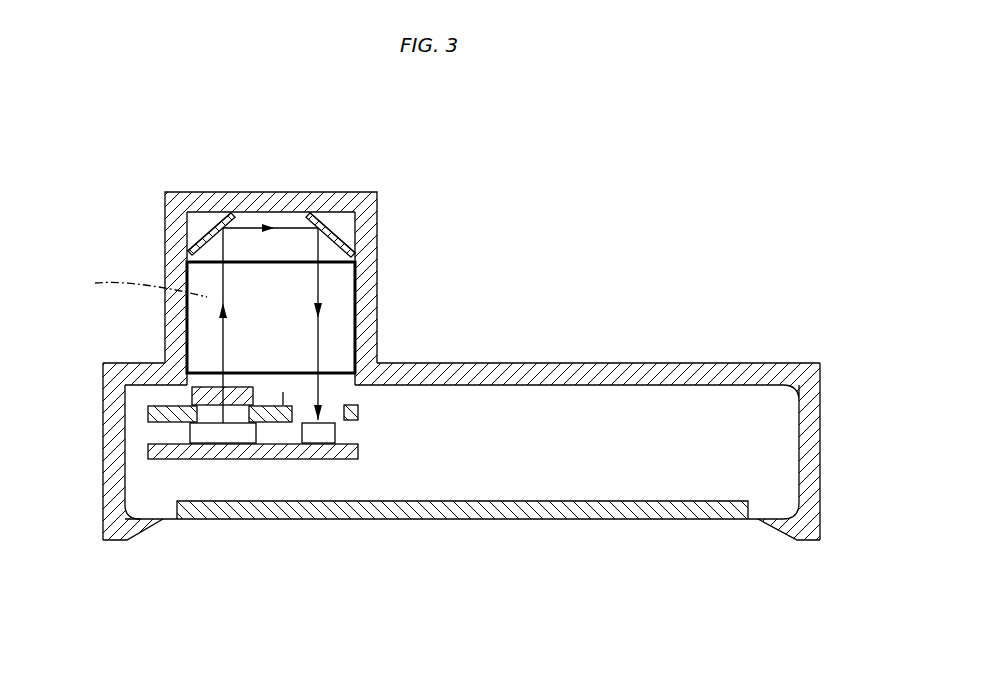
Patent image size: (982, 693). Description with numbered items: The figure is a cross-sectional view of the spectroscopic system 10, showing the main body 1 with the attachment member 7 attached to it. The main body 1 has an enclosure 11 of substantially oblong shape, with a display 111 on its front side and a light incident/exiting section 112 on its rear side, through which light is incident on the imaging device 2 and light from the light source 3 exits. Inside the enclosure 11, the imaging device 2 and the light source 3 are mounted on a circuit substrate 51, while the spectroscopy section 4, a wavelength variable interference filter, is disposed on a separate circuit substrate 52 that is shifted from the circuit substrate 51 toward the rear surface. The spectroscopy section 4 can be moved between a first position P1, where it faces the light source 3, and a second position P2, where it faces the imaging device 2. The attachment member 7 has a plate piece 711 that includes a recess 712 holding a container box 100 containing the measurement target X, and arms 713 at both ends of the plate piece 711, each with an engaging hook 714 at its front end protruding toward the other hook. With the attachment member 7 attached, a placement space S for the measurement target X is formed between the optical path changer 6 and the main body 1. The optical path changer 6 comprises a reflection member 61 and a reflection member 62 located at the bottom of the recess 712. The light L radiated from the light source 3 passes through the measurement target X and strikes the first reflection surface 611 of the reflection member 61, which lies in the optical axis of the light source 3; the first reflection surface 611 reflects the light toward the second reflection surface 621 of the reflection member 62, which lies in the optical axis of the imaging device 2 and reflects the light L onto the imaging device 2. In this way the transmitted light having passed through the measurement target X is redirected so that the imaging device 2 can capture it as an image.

The main body 1 is at (460, 447).
The imaging device 2 is at (328, 434).
The light source 3 is at (203, 433).
The spectroscopy section 4 is at (190, 388).
The optical path changer 6 is at (320, 134).
The attachment member 7 is at (664, 358).
The spectroscopic system 10 is at (799, 219).
The enclosure 11 is at (770, 432).
The circuit substrate 51 is at (283, 460).
The circuit substrate 52 is at (157, 407).
The reflection member 61 is at (208, 232).
The reflection member 62 is at (331, 233).
The container box 100 is at (352, 356).
The display 111 is at (553, 520).
The light incident/exiting section 112 is at (377, 353).
The first reflection surface 611 is at (196, 250).
The second reflection surface 621 is at (349, 254).
The plate piece 711 is at (575, 363).
The recess 712 is at (343, 318).
The arms 713 is at (117, 450).
The engaging hook 714 is at (128, 541).
The light L is at (222, 282).
The placement space S is at (344, 284).
The measurement target X is at (141, 287).
The first position P1 is at (210, 370).
The second position P2 is at (293, 404).